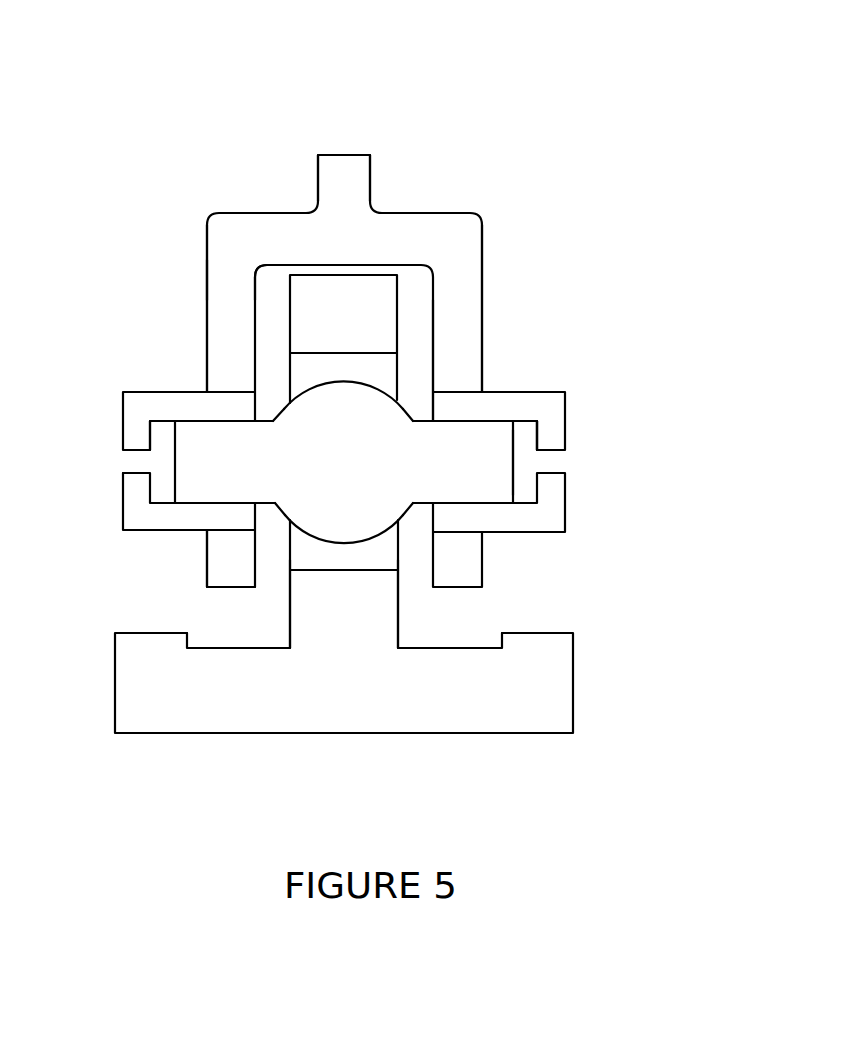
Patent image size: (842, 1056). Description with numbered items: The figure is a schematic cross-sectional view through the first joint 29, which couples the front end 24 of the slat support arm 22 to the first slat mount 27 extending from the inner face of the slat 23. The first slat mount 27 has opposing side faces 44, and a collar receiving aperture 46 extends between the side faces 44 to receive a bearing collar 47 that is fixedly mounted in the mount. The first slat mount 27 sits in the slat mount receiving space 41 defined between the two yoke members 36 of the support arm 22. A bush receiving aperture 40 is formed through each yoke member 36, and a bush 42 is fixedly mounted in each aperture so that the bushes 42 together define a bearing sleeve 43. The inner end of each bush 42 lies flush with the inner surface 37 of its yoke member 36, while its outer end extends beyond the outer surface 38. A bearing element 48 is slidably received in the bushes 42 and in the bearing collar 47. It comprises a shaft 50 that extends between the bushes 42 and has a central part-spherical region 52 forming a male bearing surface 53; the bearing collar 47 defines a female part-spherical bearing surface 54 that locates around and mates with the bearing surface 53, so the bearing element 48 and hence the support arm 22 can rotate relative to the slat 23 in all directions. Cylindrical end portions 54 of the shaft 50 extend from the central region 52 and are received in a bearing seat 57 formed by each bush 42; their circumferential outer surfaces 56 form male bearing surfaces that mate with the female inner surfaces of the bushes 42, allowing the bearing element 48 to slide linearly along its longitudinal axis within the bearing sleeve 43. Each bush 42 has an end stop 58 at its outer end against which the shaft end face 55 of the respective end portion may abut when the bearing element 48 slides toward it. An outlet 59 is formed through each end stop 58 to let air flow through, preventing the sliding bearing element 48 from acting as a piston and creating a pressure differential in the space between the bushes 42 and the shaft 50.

The first joint 29 is at (493, 133).
The front end 24 is at (337, 175).
The support arm 22 is at (397, 240).
The yoke member 36 is at (223, 368).
The inner surface 37 is at (253, 290).
The outer surface 38 is at (207, 282).
The part-spherical bearing surface 53 is at (283, 400).
The central part-spherical region 52 is at (333, 513).
The end portion 54 is at (368, 383).
The slat mount receiving space 41 is at (420, 363).
The bush 42 is at (495, 403).
The bearing sleeve 43 is at (150, 428).
The end stop 58 is at (137, 433).
The bearing element 48 is at (500, 447).
The shaft 50 is at (190, 460).
The shaft end face 55 is at (515, 467).
The bearing seat 57 is at (522, 503).
The outlet 59 is at (140, 467).
The circumferential outer surface 56 is at (200, 507).
The bush receiving aperture 40 is at (233, 533).
The first slat mount 27 is at (378, 612).
The slat 23 is at (487, 710).
The side face 44 is at (290, 610).
The bearing collar 47 is at (303, 562).
The collar receiving aperture 46 is at (350, 570).